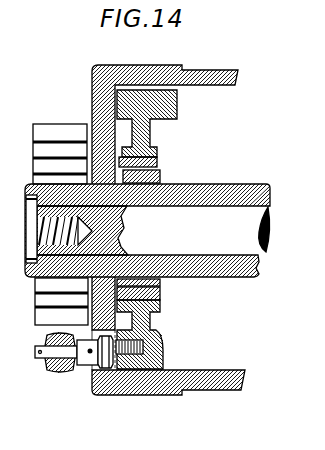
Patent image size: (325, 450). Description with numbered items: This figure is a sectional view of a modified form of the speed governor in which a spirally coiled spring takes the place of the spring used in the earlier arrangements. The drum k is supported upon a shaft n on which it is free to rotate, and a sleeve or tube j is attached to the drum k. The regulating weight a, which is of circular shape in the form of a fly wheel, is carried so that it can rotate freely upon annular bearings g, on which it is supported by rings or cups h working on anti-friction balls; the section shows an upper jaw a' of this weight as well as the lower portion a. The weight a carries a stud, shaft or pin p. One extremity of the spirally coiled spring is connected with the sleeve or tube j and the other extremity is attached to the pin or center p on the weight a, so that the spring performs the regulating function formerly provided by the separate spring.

The drum k is at (161, 242).
The tube j is at (147, 231).
The shaft n is at (153, 230).
The upper clamping jaw a' is at (155, 123).
The rings or cups h is at (165, 157).
The annular bearings g is at (125, 169).
The regulating weight a is at (149, 334).
The stud or shaft p is at (74, 358).